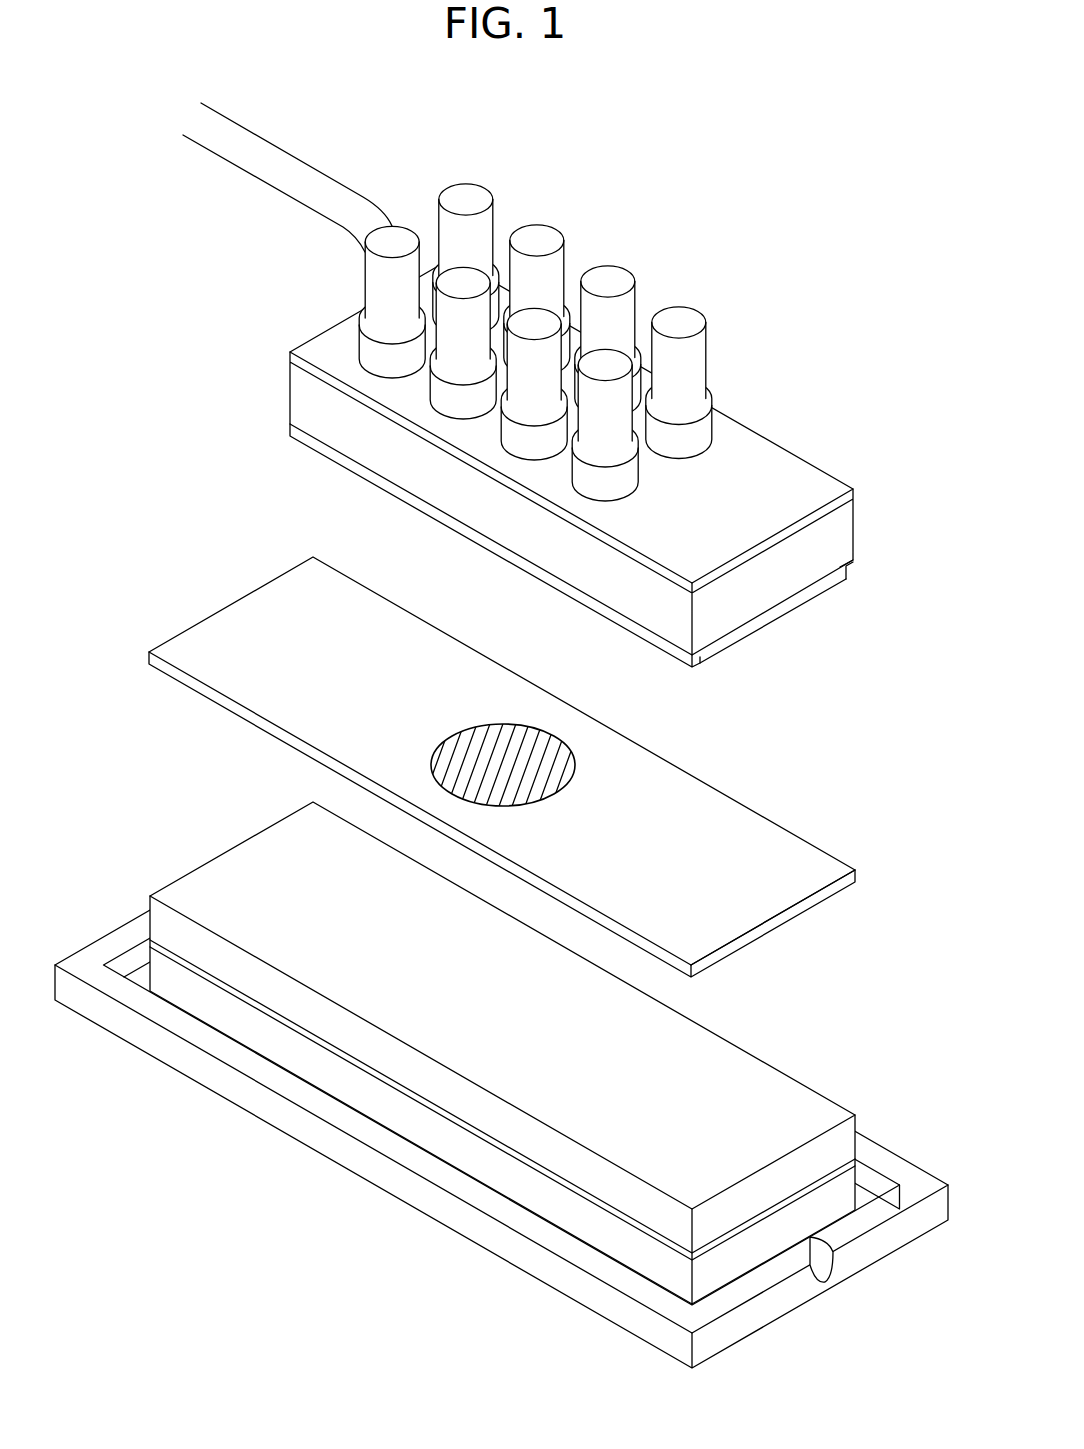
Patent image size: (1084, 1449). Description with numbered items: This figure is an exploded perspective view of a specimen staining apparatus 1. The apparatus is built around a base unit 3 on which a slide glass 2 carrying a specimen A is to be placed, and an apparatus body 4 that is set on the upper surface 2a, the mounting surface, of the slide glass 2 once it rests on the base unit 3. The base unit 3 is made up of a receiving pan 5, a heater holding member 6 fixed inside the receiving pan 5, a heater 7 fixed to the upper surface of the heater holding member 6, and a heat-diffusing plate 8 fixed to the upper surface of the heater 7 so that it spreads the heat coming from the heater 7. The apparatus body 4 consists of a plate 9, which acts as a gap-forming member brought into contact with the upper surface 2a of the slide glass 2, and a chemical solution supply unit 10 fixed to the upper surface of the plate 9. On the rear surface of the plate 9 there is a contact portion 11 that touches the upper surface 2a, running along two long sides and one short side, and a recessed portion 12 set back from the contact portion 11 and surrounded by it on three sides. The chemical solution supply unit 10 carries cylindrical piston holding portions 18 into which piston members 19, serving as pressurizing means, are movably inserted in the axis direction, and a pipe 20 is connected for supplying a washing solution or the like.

The specimen staining apparatus 1 is at (80, 279).
The slide glass 2 is at (220, 596).
The upper surface 2a is at (778, 858).
The base unit 3 is at (830, 1073).
The apparatus body 4 is at (856, 467).
The receiving pan 5 is at (865, 1248).
The heater holding member 6 is at (512, 1172).
The heater 7 is at (367, 1065).
The heat-diffusing plate 8 is at (262, 985).
The plate 9 is at (880, 565).
The chemical solution supply unit 10 is at (773, 478).
The contact portion 11 is at (853, 573).
The recessed portion 12 is at (790, 607).
The piston holding portions 18 is at (703, 425).
The piston members 19 is at (688, 315).
The pipe 20 is at (287, 167).
The specimen A is at (515, 732).